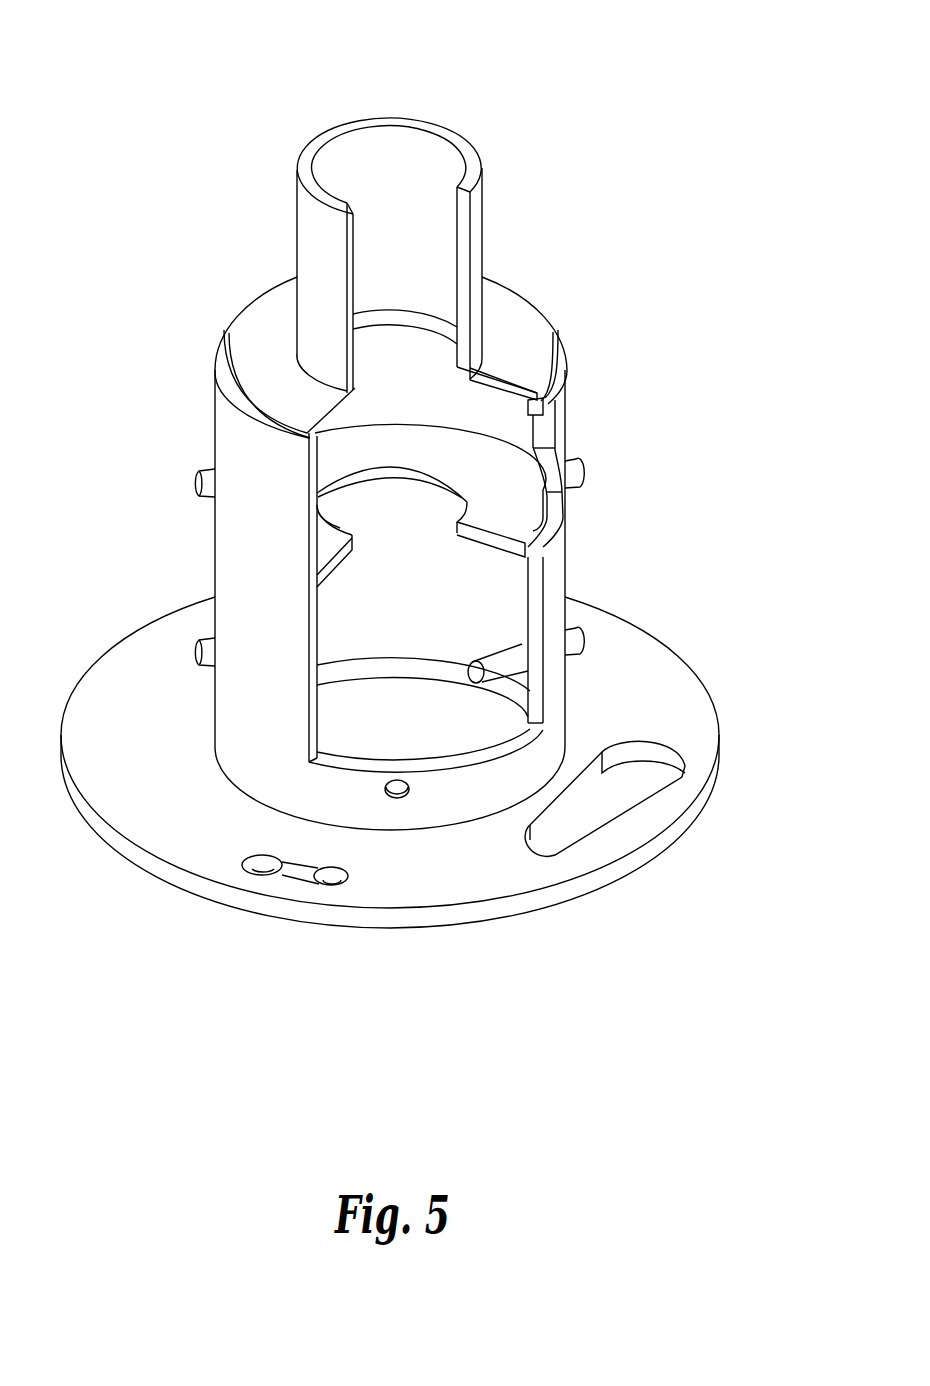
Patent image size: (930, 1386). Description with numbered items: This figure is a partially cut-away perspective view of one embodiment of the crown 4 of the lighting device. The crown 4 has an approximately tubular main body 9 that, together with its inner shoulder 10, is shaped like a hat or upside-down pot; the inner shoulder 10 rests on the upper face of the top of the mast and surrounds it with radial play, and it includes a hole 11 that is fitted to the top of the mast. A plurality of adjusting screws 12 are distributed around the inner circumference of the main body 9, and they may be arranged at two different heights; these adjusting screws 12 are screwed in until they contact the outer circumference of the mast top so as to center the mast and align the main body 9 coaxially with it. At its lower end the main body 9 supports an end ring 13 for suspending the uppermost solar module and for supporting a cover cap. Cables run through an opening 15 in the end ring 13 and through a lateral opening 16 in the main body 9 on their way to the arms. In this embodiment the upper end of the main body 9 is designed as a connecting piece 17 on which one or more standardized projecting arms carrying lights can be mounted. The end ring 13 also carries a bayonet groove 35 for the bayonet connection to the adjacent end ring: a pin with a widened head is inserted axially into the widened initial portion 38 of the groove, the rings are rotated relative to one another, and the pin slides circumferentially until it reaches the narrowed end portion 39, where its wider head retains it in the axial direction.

The crown 4 is at (182, 150).
The main body 9 is at (228, 583).
The inner shoulder 10 is at (491, 521).
The hole 11 is at (403, 525).
The adjusting screws 12 is at (200, 478).
The end ring 13 is at (103, 793).
The opening 15 is at (598, 812).
The lateral opening 16 is at (553, 521).
The connecting piece 17 is at (481, 210).
The bayonet groove 35 is at (293, 878).
The widened initial portion 38 is at (255, 866).
The narrowed end portion 39 is at (333, 879).